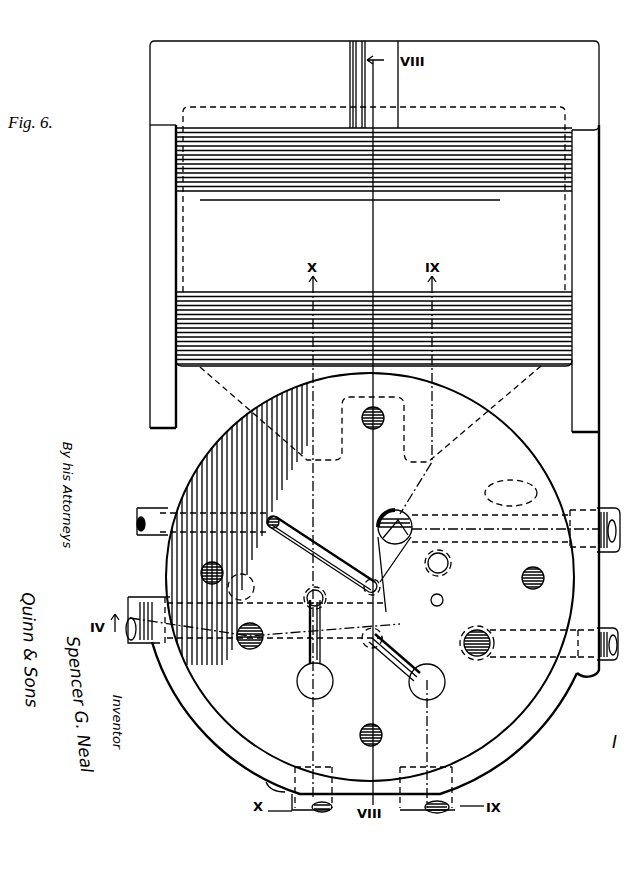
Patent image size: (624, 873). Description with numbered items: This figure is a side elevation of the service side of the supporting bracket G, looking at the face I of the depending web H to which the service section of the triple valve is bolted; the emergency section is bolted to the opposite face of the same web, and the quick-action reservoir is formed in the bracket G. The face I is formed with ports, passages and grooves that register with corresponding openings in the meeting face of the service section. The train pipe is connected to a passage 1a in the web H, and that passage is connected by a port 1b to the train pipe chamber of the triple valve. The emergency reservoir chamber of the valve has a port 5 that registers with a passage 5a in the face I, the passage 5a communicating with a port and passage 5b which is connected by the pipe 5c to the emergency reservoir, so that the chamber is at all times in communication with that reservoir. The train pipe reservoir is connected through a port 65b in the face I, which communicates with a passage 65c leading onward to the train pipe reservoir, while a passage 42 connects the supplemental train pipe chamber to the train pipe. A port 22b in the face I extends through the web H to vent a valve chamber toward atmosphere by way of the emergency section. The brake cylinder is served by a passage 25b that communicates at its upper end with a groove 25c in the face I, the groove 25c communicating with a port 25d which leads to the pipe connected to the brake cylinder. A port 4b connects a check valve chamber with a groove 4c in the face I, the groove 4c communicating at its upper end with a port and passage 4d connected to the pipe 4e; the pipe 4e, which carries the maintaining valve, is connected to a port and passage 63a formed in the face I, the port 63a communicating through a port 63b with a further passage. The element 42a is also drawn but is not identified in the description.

The supporting bracket G is at (150, 212).
The depending web H is at (185, 386).
The face of the web I is at (238, 715).
The pipe 4e is at (138, 525).
The passage 1a is at (241, 587).
The port 1b is at (250, 649).
The port 5 is at (312, 592).
The passage 5a is at (308, 598).
The port and passage 5b is at (298, 683).
The pipe 5c is at (266, 782).
The groove 4c is at (338, 556).
The port and passage 4d is at (276, 518).
The port 4b is at (387, 581).
The port 65b is at (406, 518).
The passage 65c is at (497, 517).
The passage 42 is at (443, 552).
The hole 42a is at (451, 563).
The port 22b is at (441, 602).
The port and passage 63a is at (478, 630).
The port 63b is at (492, 643).
The passage 25b is at (394, 634).
The groove 25c is at (390, 656).
The port 25d is at (446, 683).